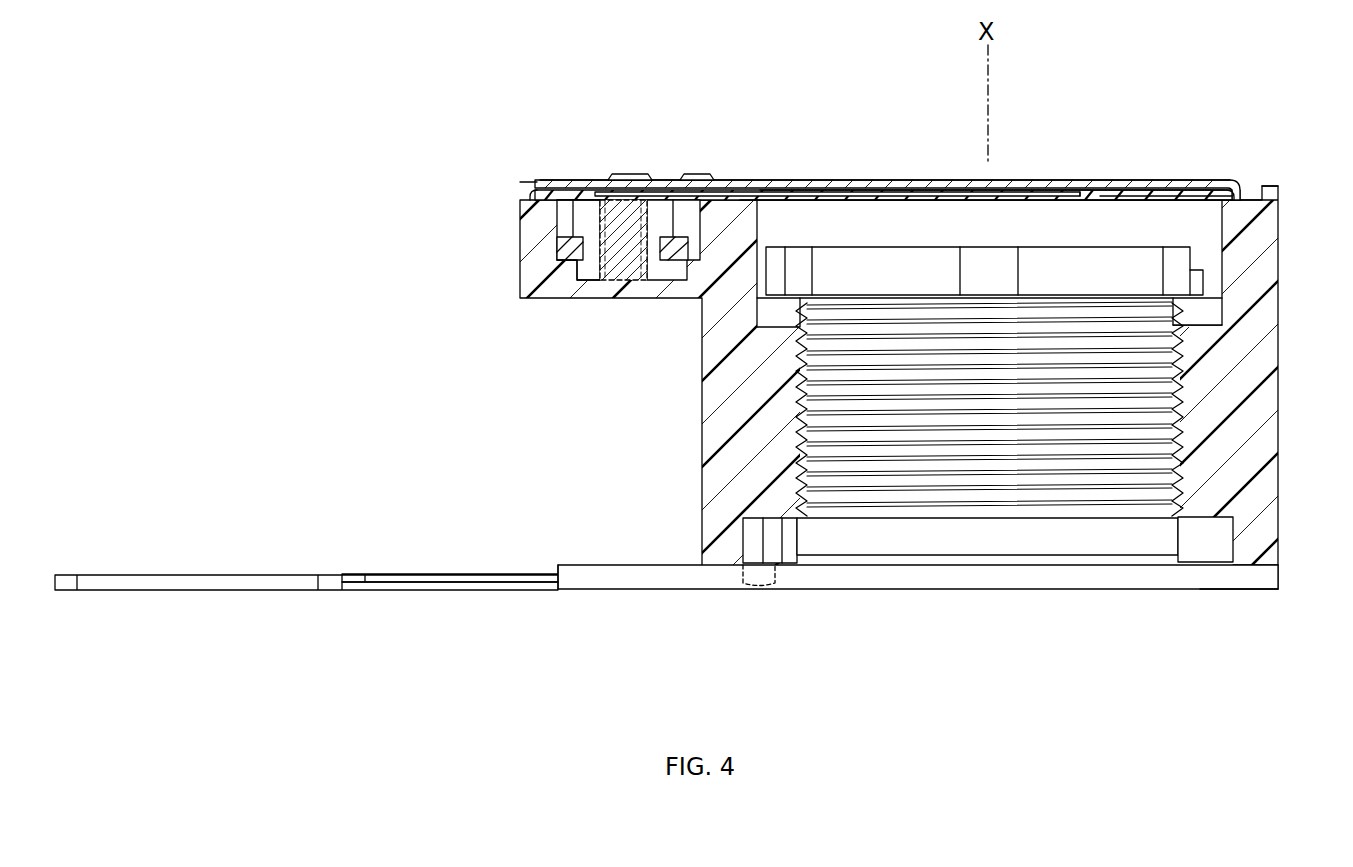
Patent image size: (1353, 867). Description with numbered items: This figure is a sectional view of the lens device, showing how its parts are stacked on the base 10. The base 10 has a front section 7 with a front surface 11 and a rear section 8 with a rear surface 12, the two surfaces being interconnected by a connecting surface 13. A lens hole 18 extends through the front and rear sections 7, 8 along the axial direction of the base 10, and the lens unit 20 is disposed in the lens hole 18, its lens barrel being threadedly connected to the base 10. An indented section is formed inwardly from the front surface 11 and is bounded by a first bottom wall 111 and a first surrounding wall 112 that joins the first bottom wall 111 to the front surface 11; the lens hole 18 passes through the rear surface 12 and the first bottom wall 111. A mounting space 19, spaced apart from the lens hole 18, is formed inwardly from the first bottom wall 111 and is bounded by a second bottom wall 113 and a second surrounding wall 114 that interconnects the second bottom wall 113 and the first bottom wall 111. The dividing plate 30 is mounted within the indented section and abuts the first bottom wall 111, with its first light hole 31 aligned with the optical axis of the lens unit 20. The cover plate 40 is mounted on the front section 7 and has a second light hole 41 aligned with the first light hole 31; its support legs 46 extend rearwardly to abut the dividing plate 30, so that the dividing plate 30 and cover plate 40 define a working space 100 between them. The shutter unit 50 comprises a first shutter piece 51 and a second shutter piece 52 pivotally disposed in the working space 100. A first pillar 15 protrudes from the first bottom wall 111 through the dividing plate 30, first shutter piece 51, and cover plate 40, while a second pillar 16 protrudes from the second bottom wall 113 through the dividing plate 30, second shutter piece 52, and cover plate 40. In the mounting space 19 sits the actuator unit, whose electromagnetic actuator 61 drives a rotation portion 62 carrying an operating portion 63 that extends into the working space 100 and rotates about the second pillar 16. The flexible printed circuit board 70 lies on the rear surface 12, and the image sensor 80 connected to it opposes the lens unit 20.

The front section 7 is at (1292, 215).
The rear section 8 is at (1265, 492).
The base 10 is at (1278, 382).
The front surface 11 is at (1270, 196).
The rear surface 12 is at (1255, 592).
The connecting surface 13 is at (1265, 470).
The first pillar 15 is at (693, 176).
The second pillar 16 is at (598, 298).
The lens hole 18 is at (800, 455).
The mounting space 19 is at (562, 210).
The lens unit 20 is at (1033, 508).
The dividing plate 30 is at (1100, 191).
The first light hole 31 is at (1040, 195).
The cover plate 40 is at (830, 182).
The second light hole 41 is at (937, 182).
The support legs 46 is at (527, 192).
The shutter unit 50 is at (722, 190).
The first shutter piece 51 is at (785, 193).
The second shutter piece 52 is at (752, 198).
The electromagnetic actuator 61 is at (565, 262).
The rotation portion 62 is at (575, 250).
The operating portion 63 is at (645, 176).
The flexible printed circuit board 70 is at (603, 592).
The image sensor 80 is at (915, 570).
The working space 100 is at (1160, 194).
The first bottom wall 111 is at (1236, 208).
The first surrounding wall 112 is at (1245, 195).
The second bottom wall 113 is at (656, 300).
The second surrounding wall 114 is at (560, 228).